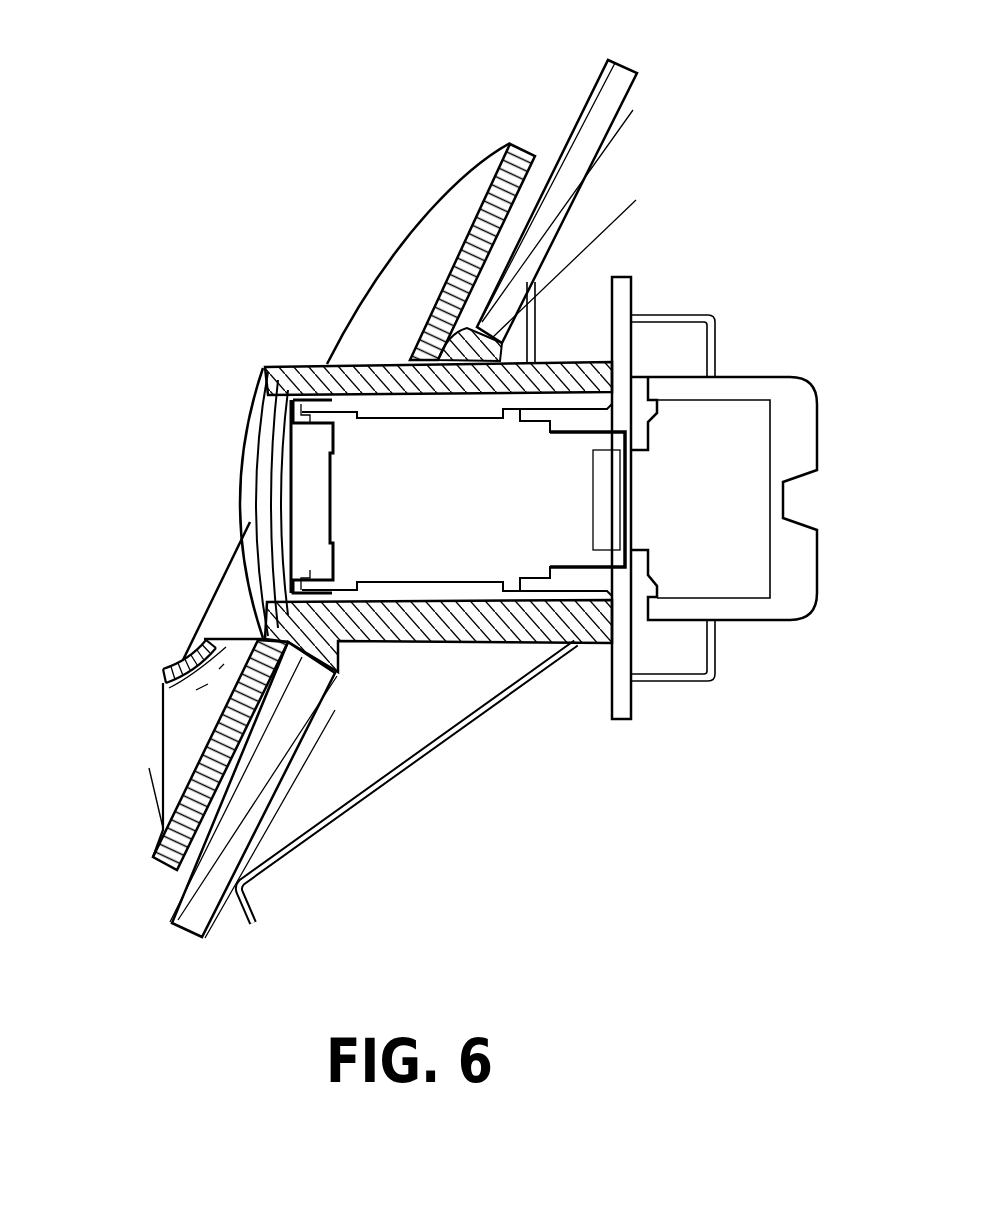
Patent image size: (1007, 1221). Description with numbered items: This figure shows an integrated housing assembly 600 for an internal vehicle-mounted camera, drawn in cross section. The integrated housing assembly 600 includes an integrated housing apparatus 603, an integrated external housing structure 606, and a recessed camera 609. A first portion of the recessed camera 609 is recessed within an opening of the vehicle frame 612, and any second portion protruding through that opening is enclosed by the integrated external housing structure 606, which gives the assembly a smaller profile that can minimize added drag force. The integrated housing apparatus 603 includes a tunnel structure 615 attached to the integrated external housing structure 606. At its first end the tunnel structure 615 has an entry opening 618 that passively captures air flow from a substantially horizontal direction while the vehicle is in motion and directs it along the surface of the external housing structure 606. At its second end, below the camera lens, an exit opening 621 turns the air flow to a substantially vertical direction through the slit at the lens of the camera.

The integrated housing assembly 600 is at (157, 212).
The integrated housing apparatus 603 is at (166, 643).
The integrated external housing structure 606 is at (508, 143).
The recessed camera 609 is at (762, 353).
The vehicle frame 612 is at (637, 73).
The tunnel structure 615 is at (148, 662).
The entry opening 618 is at (153, 758).
The exit opening 621 is at (228, 615).